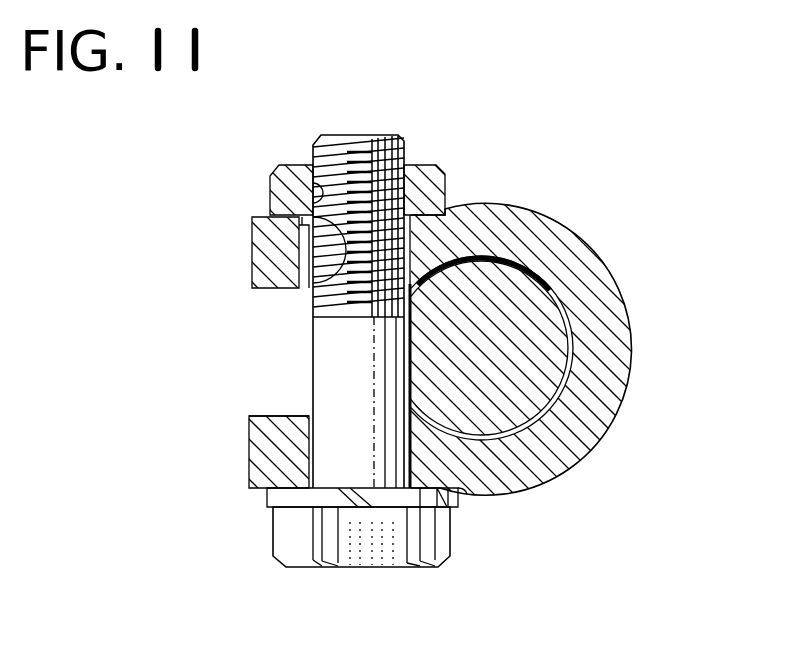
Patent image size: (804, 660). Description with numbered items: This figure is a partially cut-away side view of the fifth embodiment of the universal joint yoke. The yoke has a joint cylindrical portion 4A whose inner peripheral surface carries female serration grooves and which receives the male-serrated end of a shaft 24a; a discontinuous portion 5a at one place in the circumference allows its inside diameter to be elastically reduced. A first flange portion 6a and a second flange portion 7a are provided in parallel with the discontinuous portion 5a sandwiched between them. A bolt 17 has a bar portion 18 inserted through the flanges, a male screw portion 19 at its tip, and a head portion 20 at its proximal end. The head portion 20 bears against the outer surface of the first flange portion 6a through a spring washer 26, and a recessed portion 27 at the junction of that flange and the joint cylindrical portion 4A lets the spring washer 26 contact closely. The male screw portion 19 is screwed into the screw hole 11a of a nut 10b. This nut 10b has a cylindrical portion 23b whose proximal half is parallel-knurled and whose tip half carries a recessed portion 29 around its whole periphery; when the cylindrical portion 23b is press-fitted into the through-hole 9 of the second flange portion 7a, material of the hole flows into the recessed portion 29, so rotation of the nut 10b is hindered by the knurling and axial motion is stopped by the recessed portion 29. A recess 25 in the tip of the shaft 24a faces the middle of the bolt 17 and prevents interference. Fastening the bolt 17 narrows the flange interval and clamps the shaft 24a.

The joint cylindrical portion 4A is at (618, 300).
The shaft 24a is at (550, 378).
The recess 25 is at (420, 328).
The recessed portion 29 is at (447, 243).
The bolt 17 is at (330, 360).
The bar portion 18 is at (342, 382).
The male screw portion 19 is at (356, 178).
The cylindrical portion 23b is at (308, 292).
The screw hole 11a is at (270, 189).
The nut 10b is at (430, 184).
The second flange portion 7a is at (254, 250).
The through-hole 9 is at (300, 274).
The first flange portion 6a is at (270, 453).
The discontinuous portion 5a is at (272, 406).
The recessed portion 27 is at (455, 507).
The spring washer 26 is at (420, 493).
The head portion 20 is at (370, 543).